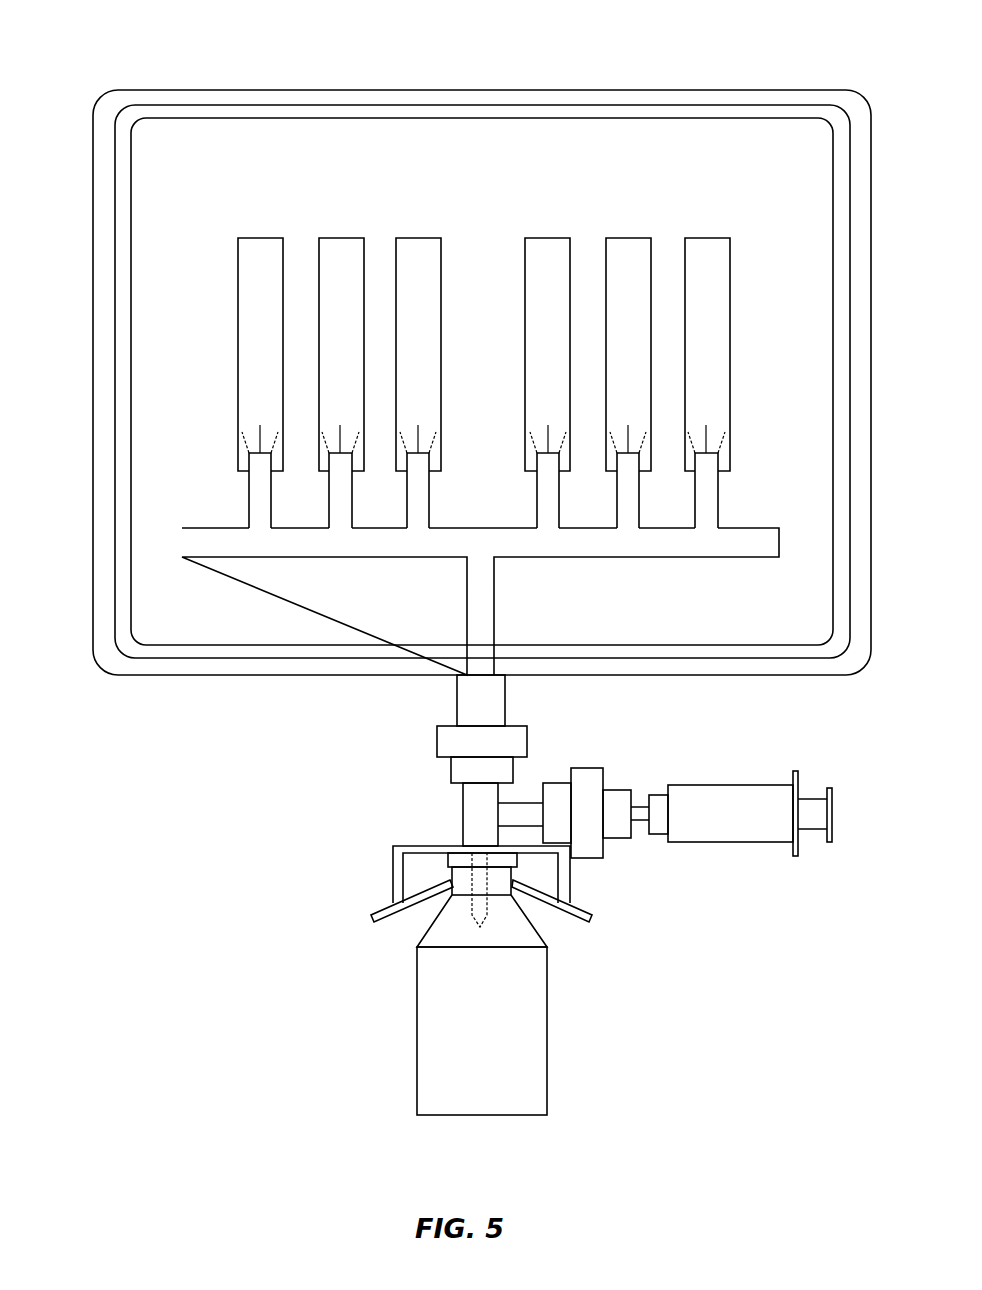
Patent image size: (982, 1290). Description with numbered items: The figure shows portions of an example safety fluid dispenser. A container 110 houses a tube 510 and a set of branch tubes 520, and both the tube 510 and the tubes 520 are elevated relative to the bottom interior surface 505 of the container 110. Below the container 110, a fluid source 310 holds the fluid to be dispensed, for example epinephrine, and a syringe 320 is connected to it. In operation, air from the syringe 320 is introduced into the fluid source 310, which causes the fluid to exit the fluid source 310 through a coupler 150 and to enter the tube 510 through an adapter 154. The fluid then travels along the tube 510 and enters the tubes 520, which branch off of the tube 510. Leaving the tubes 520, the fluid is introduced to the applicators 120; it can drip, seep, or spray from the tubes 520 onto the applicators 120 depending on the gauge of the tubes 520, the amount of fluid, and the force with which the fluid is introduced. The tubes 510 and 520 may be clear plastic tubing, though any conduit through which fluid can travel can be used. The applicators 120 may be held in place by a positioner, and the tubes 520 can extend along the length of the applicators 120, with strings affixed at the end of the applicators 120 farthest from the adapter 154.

The container 110 is at (161, 96).
The bottom interior surface 505 is at (240, 137).
The applicators 120 is at (246, 257).
The tubes 520 is at (417, 515).
The tube 510 is at (485, 620).
The adapter 154 is at (473, 711).
The coupler 150 is at (457, 816).
The syringe 320 is at (732, 847).
The fluid source 310 is at (410, 1050).